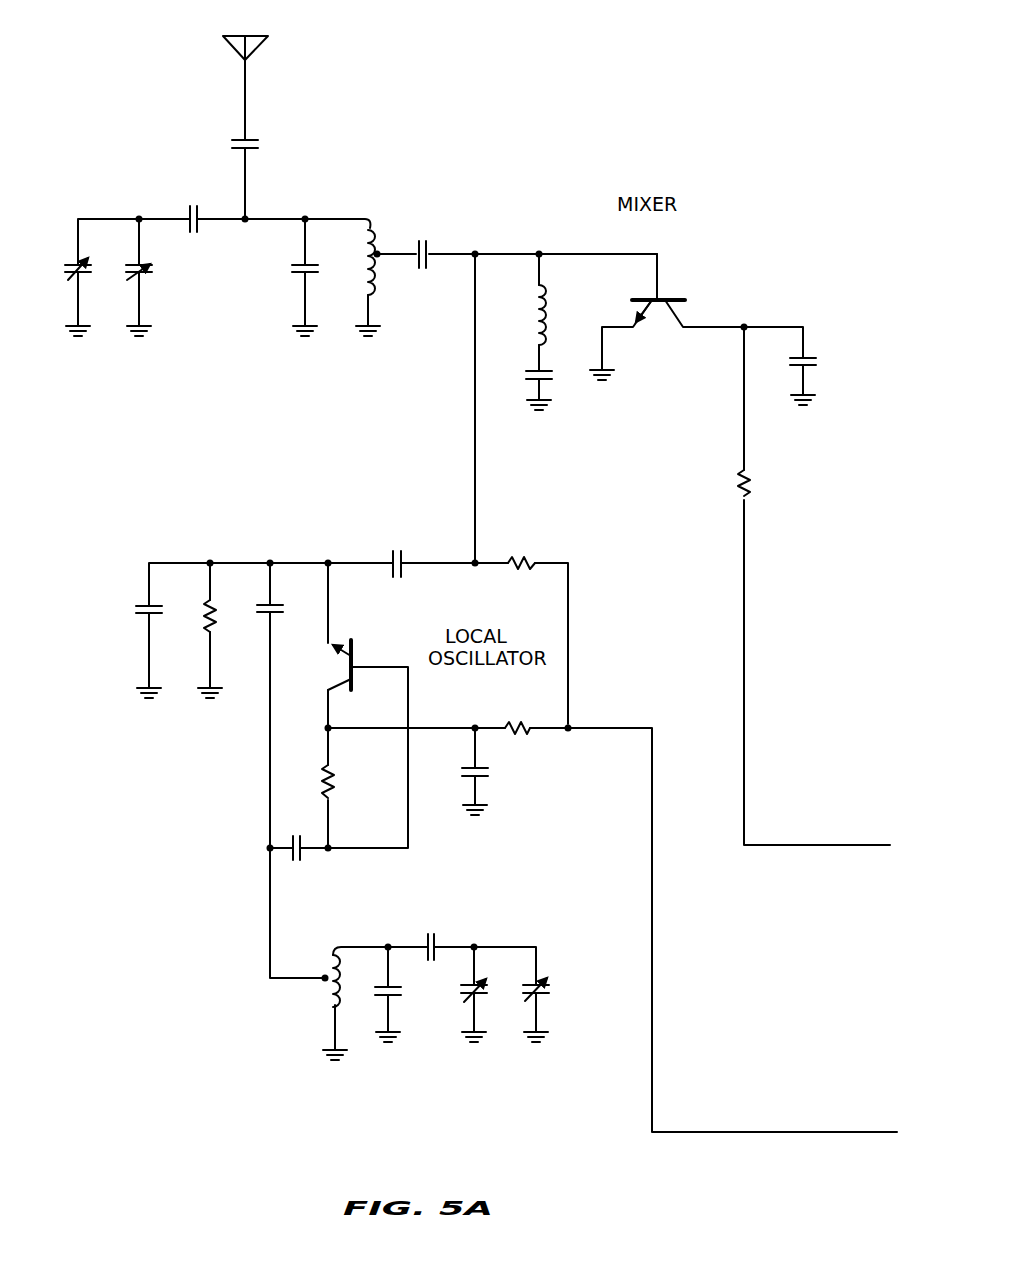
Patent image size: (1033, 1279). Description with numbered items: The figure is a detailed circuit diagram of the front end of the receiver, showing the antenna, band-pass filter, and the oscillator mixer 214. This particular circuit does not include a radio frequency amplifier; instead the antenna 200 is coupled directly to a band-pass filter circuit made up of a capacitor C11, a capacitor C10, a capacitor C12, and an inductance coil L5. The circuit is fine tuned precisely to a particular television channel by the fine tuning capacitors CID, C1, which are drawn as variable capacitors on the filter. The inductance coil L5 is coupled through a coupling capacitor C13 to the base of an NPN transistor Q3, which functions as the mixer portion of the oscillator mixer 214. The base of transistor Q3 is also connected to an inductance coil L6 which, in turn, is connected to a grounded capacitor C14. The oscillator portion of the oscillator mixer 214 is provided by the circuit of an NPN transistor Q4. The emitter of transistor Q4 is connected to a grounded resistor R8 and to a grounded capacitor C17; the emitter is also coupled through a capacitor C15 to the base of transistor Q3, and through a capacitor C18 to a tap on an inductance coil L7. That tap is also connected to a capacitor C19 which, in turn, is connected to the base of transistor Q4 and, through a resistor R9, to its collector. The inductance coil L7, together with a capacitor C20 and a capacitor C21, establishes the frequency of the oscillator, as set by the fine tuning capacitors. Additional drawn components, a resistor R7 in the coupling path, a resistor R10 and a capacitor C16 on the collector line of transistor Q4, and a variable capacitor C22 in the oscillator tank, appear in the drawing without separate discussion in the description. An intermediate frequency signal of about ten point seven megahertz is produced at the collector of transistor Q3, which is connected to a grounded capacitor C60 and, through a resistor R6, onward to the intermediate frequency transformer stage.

The antenna 200 is at (262, 52).
The capacitor C11 is at (252, 143).
The capacitor C10 is at (187, 213).
The fine tuning capacitor CID is at (68, 262).
The fine tuning capacitor C1 is at (147, 262).
The capacitor C12 is at (300, 277).
The inductance coil L5 is at (375, 240).
The coupling capacitor C13 is at (428, 246).
The inductance coil L6 is at (546, 313).
The grounded capacitor C14 is at (546, 383).
The NPN transistor Q3 is at (667, 298).
The grounded capacitor C60 is at (814, 364).
The resistor R6 is at (746, 484).
The oscillator mixer 214 is at (599, 503).
The capacitor C15 is at (392, 558).
The resistor R7 is at (523, 572).
The NPN transistor Q4 is at (355, 647).
The grounded capacitor C17 is at (138, 618).
The grounded resistor R8 is at (207, 612).
The capacitor C18 is at (262, 614).
The resistor R10 is at (517, 722).
The capacitor C16 is at (483, 778).
The resistor R9 is at (334, 782).
The capacitor C19 is at (298, 858).
The capacitor C21 is at (436, 942).
The variable capacitor C22 is at (542, 984).
The inductance coil L7 is at (323, 995).
The capacitor C20 is at (393, 998).